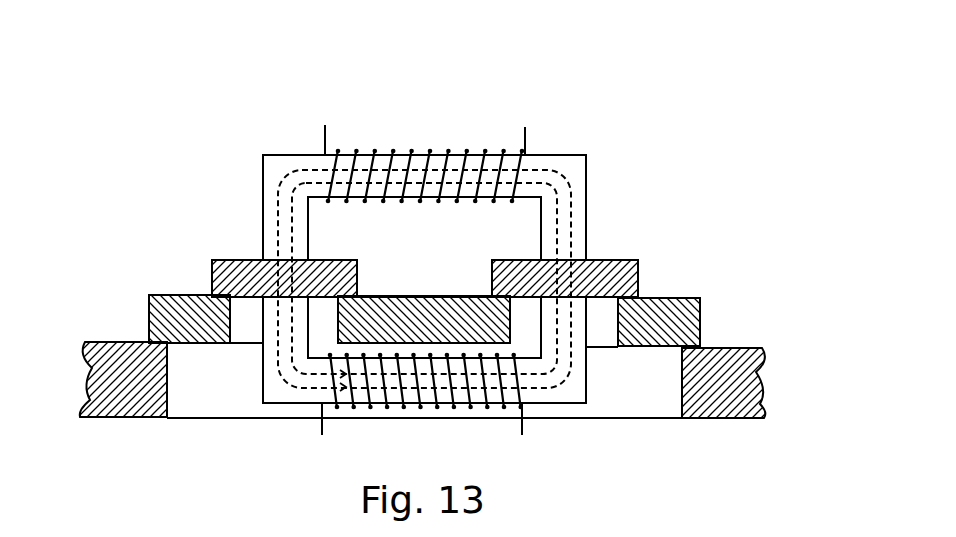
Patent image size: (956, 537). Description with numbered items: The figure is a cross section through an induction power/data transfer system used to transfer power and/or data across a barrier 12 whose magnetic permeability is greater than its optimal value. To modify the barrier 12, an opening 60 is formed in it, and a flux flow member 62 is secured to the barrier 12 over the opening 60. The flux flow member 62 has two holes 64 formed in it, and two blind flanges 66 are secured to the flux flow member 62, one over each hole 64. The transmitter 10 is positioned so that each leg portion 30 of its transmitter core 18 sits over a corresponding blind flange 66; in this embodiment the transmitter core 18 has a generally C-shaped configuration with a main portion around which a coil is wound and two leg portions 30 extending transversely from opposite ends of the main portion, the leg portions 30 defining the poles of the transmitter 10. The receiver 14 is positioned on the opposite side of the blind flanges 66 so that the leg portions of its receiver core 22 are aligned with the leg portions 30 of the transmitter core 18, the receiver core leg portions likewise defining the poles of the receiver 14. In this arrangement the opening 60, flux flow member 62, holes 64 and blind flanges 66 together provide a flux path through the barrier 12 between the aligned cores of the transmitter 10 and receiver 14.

The transmitter 10 is at (602, 138).
The barrier 12 is at (762, 313).
The receiver 14 is at (597, 398).
The transmitter core 18 is at (287, 155).
The receiver core 22 is at (570, 403).
The leg portions 30 is at (263, 183).
The opening 60 is at (167, 387).
The flux flow member 62 is at (679, 298).
The holes 64 is at (230, 322).
The blind flanges 66 is at (242, 259).